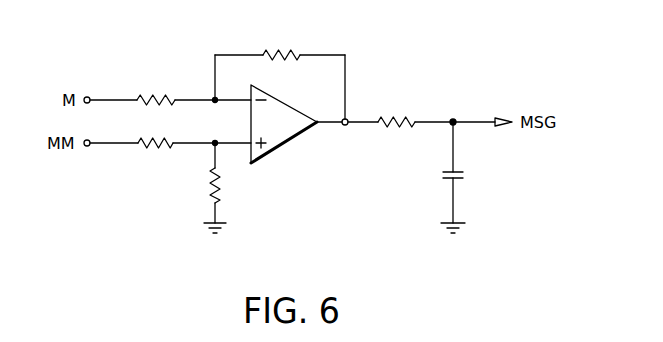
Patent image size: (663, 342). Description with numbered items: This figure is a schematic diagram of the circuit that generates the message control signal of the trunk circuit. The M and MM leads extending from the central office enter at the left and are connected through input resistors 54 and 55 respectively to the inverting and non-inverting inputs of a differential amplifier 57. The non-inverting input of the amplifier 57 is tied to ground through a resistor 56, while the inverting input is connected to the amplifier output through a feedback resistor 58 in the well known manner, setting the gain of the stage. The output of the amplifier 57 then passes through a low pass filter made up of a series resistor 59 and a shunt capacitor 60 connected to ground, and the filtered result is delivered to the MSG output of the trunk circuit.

The input resistor 54 is at (157, 95).
The input resistor 55 is at (150, 148).
The resistor 56 is at (220, 188).
The differential amplifier 57 is at (288, 145).
The feedback resistor 58 is at (290, 52).
The resistor 59 is at (396, 118).
The capacitor 60 is at (460, 172).